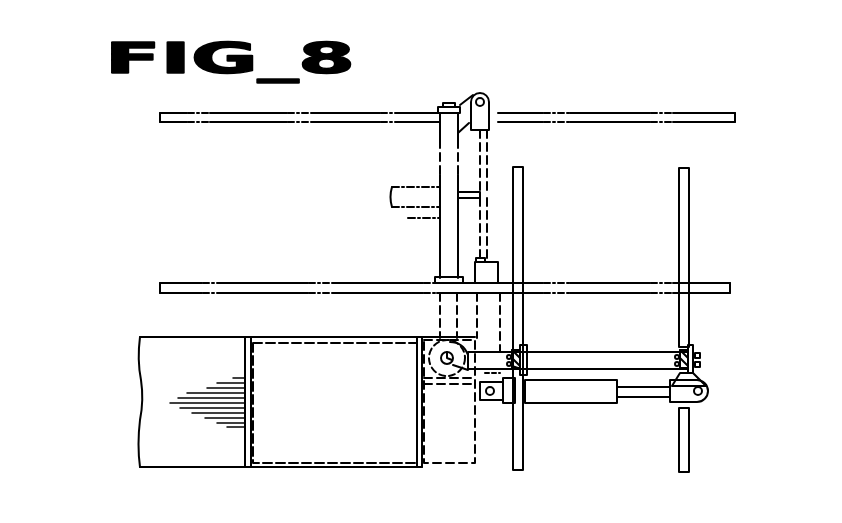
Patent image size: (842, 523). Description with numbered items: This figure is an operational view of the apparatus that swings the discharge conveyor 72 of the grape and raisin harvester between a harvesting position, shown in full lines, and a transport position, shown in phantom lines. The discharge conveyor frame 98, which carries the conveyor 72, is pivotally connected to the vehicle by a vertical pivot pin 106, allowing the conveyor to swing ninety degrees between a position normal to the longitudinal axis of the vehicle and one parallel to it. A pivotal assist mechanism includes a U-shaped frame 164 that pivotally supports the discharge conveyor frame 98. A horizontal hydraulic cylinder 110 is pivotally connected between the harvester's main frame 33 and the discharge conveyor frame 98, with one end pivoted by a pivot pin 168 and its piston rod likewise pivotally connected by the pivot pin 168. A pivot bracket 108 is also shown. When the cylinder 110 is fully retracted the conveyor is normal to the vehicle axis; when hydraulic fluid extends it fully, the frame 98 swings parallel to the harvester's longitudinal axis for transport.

The frame 33 is at (200, 474).
The discharge conveyor 72 is at (684, 134).
The discharge conveyor frame 98 is at (243, 123).
The vertical pivot pin 106 is at (420, 358).
The pivot bracket 108 is at (493, 402).
The hydraulic cylinder 110 is at (500, 263).
The U-shaped frame 164 is at (438, 216).
The pivot pin 168 is at (707, 390).